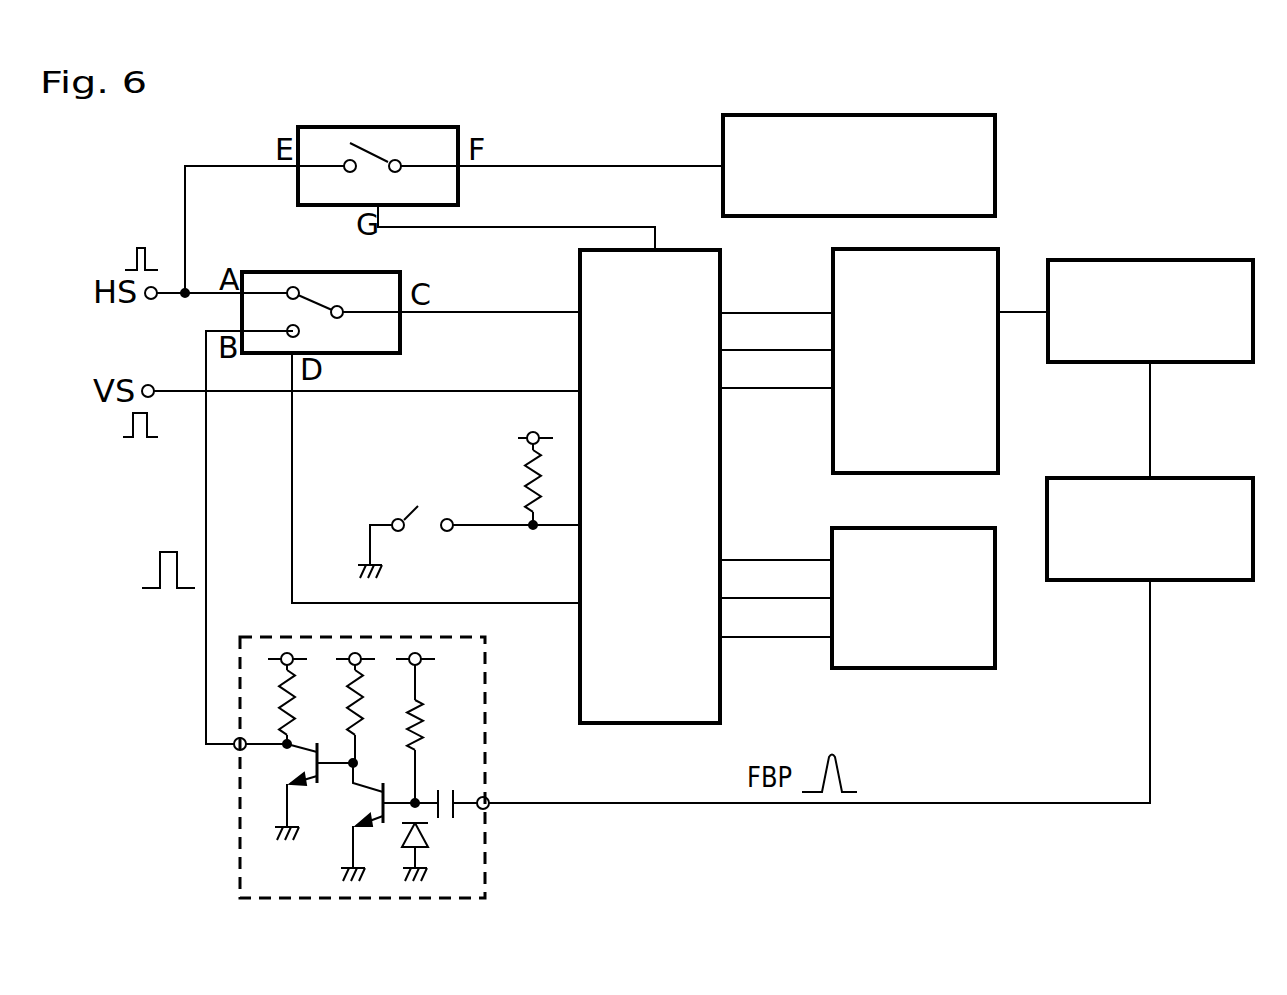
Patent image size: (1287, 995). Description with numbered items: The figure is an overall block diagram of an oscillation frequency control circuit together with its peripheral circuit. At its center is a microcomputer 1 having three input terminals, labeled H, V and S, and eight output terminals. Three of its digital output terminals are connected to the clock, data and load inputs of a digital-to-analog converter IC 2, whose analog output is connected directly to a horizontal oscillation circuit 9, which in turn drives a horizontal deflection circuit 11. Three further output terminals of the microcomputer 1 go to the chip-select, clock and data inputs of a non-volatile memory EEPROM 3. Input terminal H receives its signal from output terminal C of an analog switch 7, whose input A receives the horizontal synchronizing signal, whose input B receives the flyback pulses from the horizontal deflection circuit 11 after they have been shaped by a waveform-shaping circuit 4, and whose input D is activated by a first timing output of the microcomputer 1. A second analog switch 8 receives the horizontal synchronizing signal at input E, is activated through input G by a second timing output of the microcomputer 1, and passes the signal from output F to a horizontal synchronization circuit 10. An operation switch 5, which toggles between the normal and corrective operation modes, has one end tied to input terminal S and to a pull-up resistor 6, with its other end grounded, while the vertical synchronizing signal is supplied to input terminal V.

The microcomputer 1 is at (582, 272).
The digital-to-analog converter IC 2 is at (998, 420).
The non-volatile memory EEPROM 3 is at (945, 528).
The waveform-shaping circuit 4 is at (485, 690).
The operation switch 5 is at (417, 498).
The pull-up resistor 6 is at (517, 472).
The analog switch 7 is at (272, 272).
The analog switch 8 is at (405, 127).
The horizontal oscillation circuit 9 is at (1140, 260).
The horizontal synchronization circuit 10 is at (995, 145).
The horizontal deflection circuit 11 is at (1178, 478).